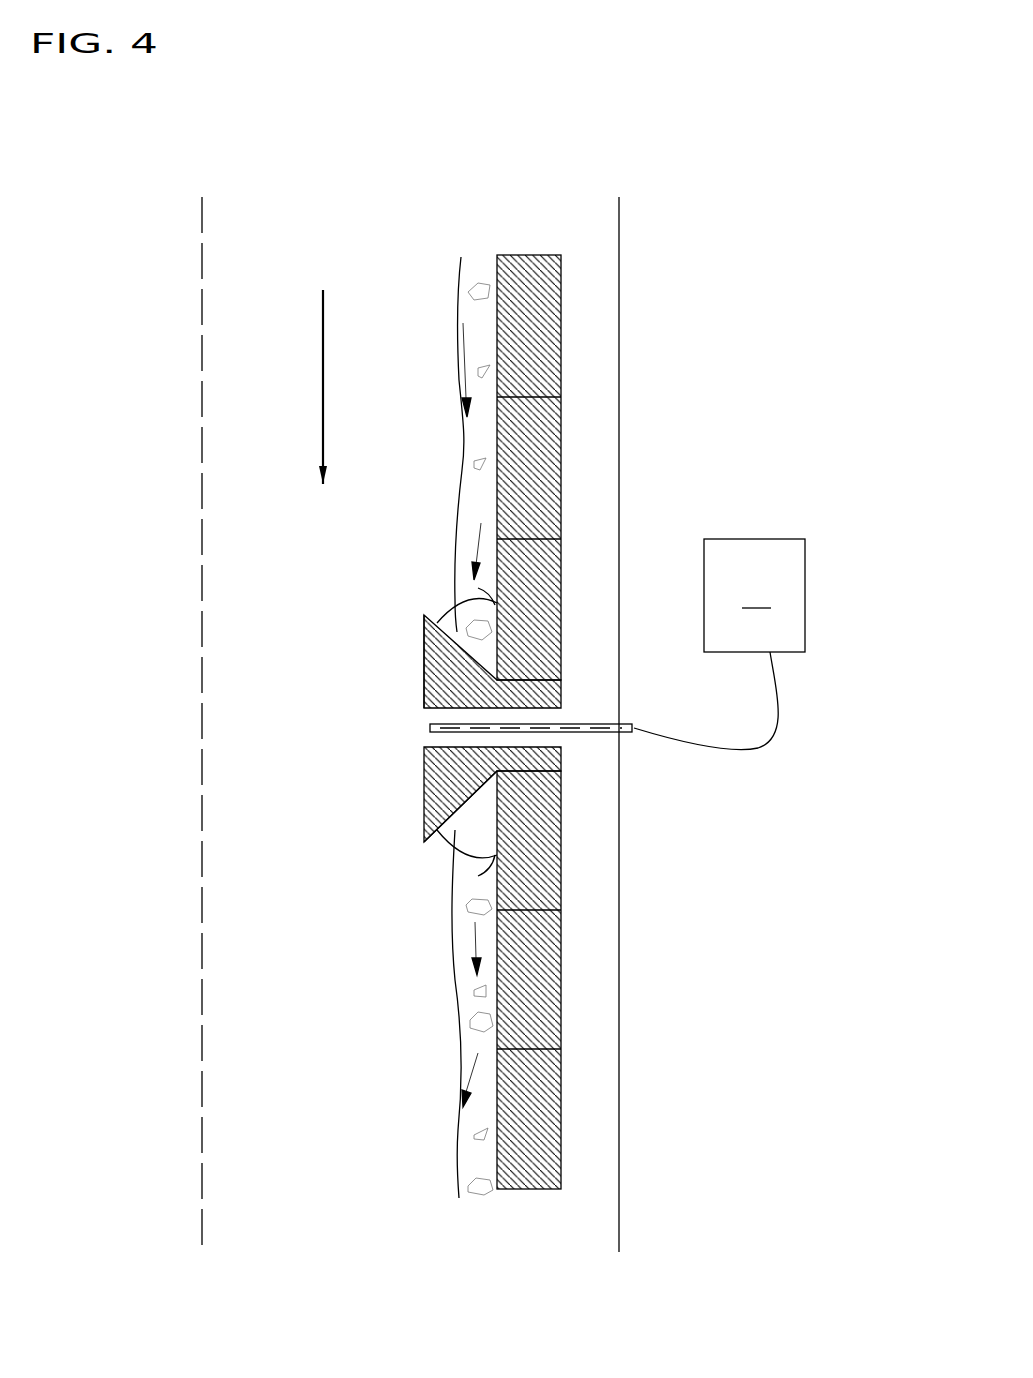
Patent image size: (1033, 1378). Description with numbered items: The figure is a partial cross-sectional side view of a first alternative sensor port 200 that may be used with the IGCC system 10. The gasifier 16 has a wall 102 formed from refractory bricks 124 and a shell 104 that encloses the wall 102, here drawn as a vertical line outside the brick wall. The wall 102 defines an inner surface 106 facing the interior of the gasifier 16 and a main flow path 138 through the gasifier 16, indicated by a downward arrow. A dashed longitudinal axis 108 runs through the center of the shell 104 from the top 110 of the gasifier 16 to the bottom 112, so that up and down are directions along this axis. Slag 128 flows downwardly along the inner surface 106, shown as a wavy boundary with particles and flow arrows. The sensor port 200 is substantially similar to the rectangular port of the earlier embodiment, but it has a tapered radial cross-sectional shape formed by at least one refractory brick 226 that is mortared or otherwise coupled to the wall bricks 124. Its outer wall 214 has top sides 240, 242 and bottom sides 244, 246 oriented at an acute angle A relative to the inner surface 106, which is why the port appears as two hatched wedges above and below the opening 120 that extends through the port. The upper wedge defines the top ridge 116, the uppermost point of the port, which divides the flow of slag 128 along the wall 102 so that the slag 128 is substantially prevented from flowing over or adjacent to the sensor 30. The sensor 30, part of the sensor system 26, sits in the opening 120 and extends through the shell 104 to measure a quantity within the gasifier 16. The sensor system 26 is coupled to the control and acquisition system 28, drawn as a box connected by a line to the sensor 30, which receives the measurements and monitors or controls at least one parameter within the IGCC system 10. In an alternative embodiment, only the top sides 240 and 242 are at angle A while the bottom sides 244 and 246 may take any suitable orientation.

The IGCC system 10 is at (258, 162).
The gasifier 16 is at (297, 435).
The sensor system 26 is at (742, 778).
The control and acquisition system 28 is at (754, 595).
The sensor 30 is at (628, 733).
The wall 102 is at (541, 467).
The shell 104 is at (588, 280).
The inner surface 106 is at (497, 423).
The longitudinal axis 108 is at (202, 961).
The top 110 is at (377, 225).
The bottom 112 is at (368, 1173).
The top ridge 116 is at (327, 620).
The opening 120 is at (420, 740).
The refractory bricks 124 is at (540, 444).
The slag 128 is at (488, 495).
The main flow path 138 is at (226, 387).
The first alternative sensor port 200 is at (353, 968).
The outer wall 214 is at (433, 845).
The refractory brick 226 is at (424, 673).
The top side 240 is at (295, 578).
The top side 242 is at (437, 600).
The bottom side 244 is at (391, 895).
The bottom side 246 is at (443, 862).